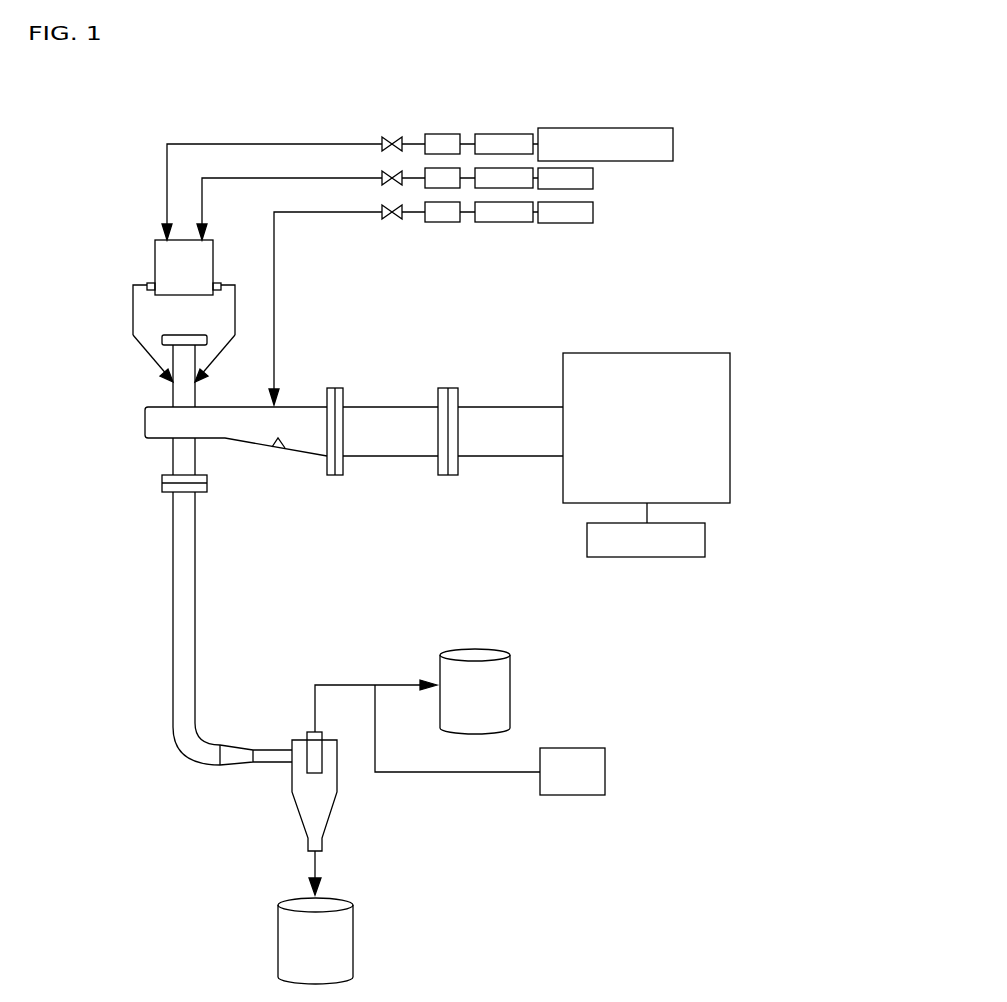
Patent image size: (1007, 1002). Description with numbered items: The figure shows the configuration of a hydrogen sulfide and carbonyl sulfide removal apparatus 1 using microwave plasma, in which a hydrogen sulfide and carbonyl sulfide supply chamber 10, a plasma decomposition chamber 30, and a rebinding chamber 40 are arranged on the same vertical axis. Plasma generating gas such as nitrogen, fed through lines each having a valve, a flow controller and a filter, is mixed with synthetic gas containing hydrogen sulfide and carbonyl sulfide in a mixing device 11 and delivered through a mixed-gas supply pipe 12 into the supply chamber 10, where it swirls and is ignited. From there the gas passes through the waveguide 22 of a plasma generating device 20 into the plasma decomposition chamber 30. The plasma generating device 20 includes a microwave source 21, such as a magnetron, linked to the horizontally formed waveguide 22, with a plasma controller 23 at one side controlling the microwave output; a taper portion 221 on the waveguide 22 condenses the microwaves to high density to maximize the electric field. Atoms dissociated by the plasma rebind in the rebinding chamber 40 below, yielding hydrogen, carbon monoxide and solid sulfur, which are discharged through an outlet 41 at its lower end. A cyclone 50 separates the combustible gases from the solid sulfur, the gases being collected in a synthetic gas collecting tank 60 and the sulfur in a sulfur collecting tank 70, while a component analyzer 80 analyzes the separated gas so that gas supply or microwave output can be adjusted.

The hydrogen sulfide and carbonyl sulfide removal apparatus 1 is at (113, 157).
The hydrogen sulfide and carbonyl sulfide supply chamber 10 is at (173, 388).
The mixing device 11 is at (158, 268).
The mixed-gas supply pipe 12 is at (133, 338).
The plasma generating device 20 is at (485, 458).
The microwave source 21 is at (597, 368).
The waveguide 22 is at (380, 458).
The taper portion 221 is at (283, 447).
The plasma controller 23 is at (620, 553).
The plasma decomposition chamber 30 is at (182, 455).
The rebinding chamber 40 is at (178, 617).
The outlet 41 is at (238, 748).
The cyclone 50 is at (310, 798).
The synthetic gas collecting tank 60 is at (475, 655).
The sulfur collecting tank 70 is at (330, 937).
The component analyzer 80 is at (575, 745).